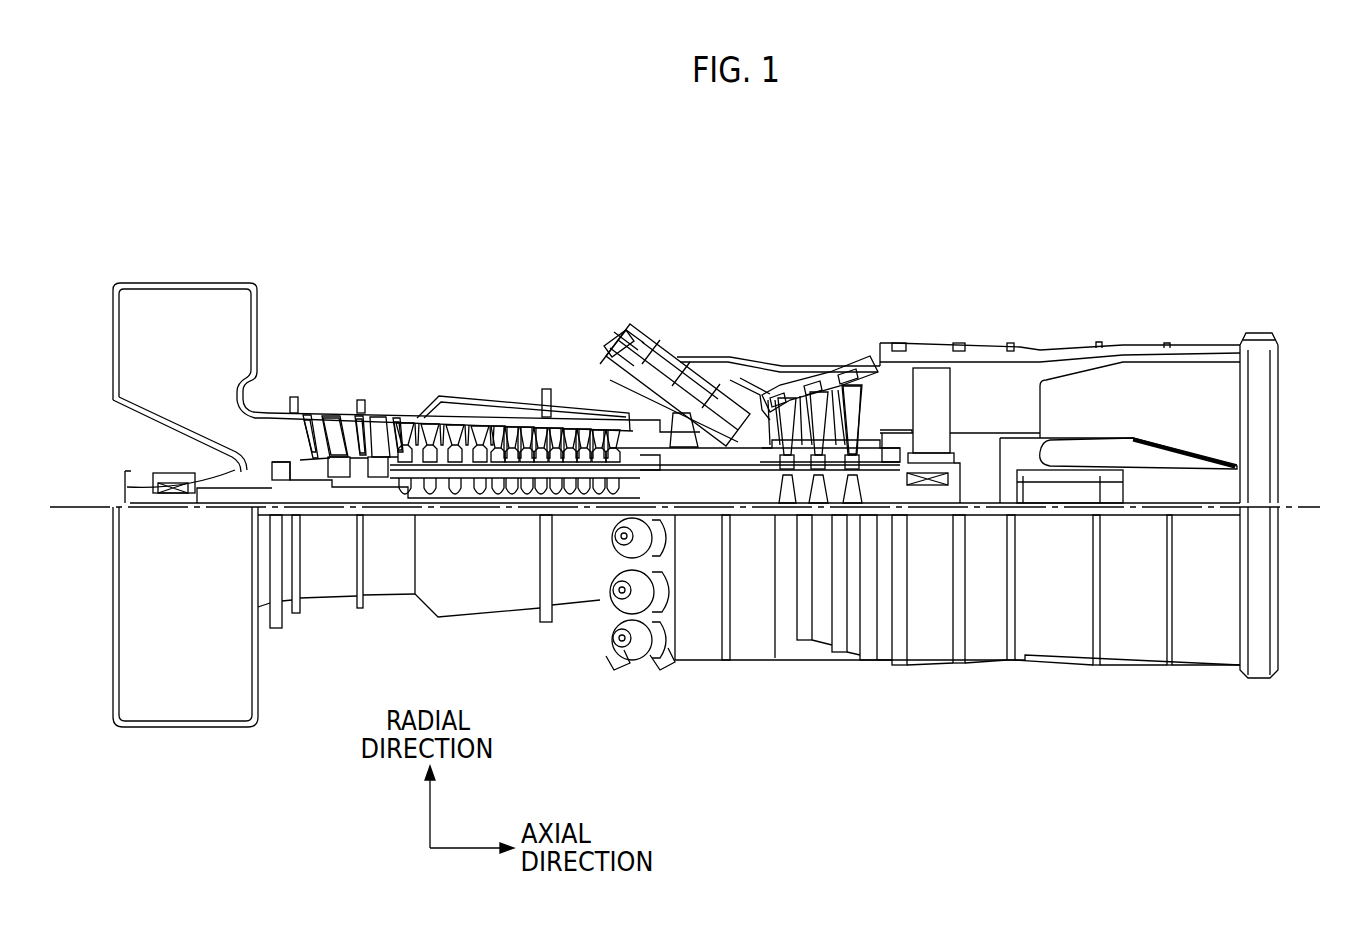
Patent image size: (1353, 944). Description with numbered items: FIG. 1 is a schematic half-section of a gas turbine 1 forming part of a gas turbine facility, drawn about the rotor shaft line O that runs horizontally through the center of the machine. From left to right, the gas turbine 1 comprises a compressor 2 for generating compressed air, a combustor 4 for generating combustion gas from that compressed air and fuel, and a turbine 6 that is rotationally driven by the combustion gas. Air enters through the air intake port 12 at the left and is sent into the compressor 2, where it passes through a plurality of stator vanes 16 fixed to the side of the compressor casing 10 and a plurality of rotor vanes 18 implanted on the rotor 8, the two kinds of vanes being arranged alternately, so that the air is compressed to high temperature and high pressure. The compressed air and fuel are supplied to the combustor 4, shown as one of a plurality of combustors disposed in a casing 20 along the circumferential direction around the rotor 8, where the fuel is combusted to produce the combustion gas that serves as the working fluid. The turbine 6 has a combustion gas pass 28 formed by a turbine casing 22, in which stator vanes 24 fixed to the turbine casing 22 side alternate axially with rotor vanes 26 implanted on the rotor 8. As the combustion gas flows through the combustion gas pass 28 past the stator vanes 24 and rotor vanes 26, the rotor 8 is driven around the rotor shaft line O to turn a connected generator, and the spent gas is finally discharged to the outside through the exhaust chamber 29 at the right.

The gas turbine 1 is at (713, 238).
The compressor 2 is at (482, 378).
The combustor 4 is at (635, 324).
The turbine 6 is at (829, 337).
The rotor 8 is at (660, 462).
The compressor casing 10 is at (338, 420).
The air intake port 12 is at (148, 366).
The stator vanes 16 is at (356, 420).
The rotor vanes 18 is at (312, 420).
The casing 20 is at (617, 362).
The turbine casing 22 is at (836, 358).
The stator vanes 24 is at (783, 408).
The rotor vanes 26 is at (787, 413).
The combustion gas pass 28 is at (849, 408).
The exhaust chamber 29 is at (1198, 347).
The rotor shaft line O is at (1302, 505).